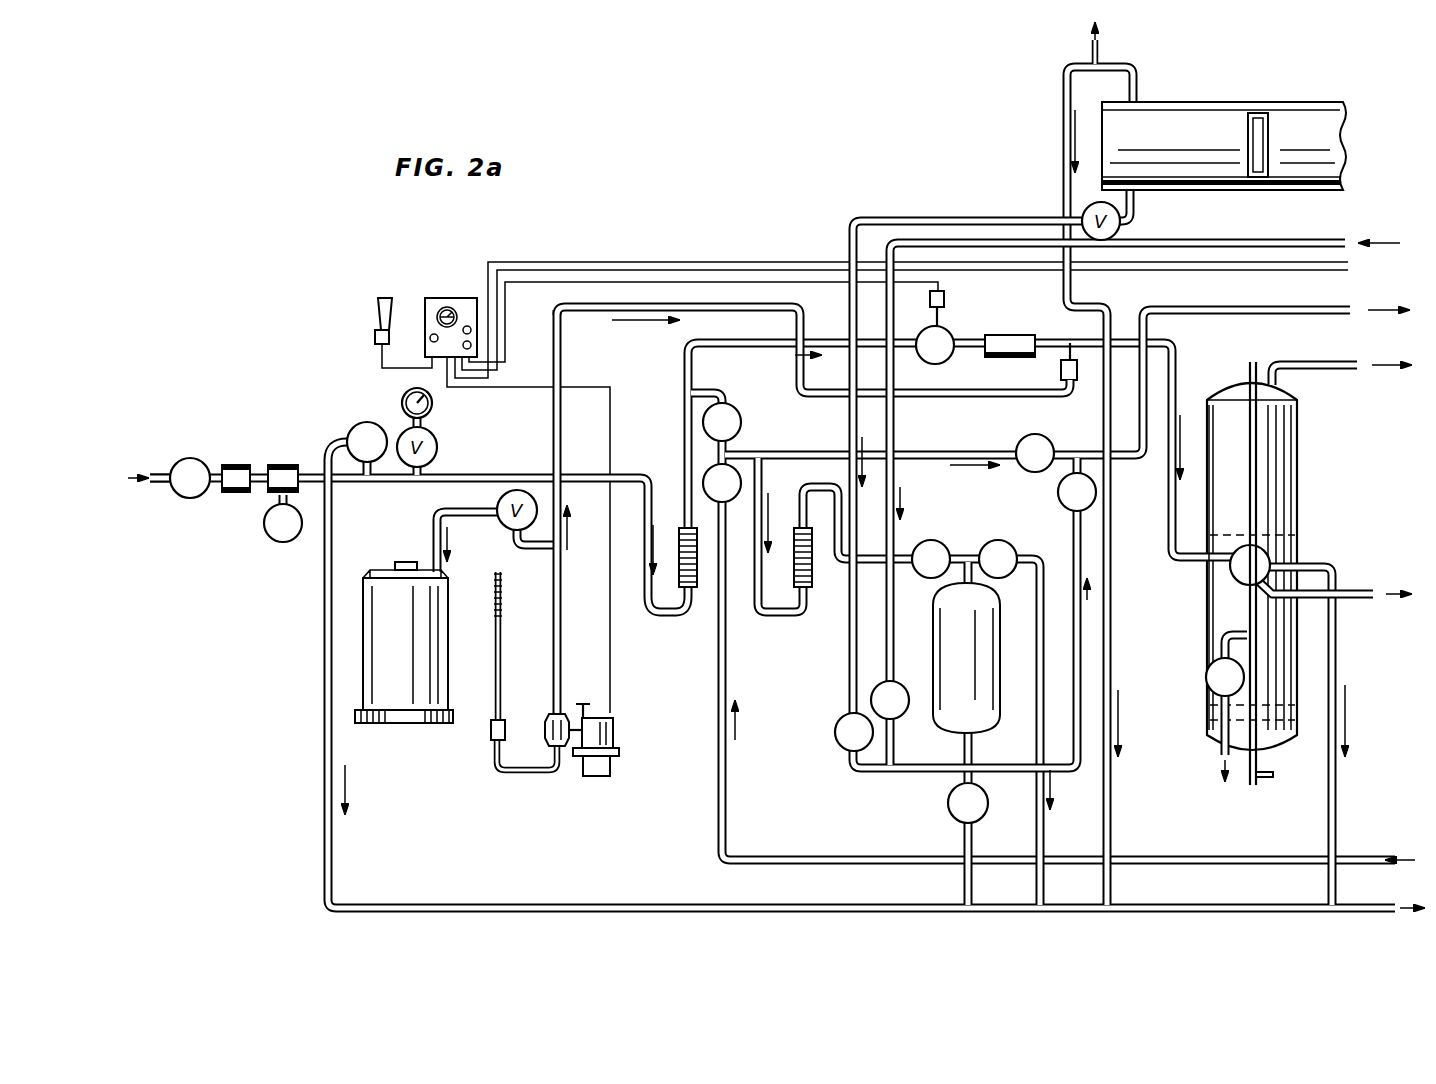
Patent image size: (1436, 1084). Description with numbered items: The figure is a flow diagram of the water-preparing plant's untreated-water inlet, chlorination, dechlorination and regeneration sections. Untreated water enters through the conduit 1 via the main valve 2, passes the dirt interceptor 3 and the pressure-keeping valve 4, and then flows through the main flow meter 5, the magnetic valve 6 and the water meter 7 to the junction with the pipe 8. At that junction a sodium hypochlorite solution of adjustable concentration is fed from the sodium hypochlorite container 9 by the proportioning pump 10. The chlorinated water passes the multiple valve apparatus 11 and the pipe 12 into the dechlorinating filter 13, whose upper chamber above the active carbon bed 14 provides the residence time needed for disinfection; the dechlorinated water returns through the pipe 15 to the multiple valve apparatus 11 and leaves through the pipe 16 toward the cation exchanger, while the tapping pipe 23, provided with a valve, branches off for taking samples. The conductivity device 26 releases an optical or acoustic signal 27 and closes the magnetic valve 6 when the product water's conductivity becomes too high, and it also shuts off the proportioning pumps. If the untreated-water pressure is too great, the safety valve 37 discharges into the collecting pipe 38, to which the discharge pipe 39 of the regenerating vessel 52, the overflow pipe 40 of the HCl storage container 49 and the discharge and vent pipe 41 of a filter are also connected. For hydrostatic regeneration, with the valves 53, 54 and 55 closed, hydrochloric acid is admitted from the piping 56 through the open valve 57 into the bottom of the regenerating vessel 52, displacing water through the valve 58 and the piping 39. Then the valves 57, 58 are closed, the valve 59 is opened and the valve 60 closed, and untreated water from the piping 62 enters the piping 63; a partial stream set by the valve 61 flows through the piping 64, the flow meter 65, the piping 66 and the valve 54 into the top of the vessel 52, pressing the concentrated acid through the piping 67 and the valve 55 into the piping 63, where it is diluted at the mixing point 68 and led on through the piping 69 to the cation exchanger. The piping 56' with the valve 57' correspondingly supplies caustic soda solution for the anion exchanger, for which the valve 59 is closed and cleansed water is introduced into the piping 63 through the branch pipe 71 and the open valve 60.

The piping or conduit 1 is at (160, 487).
The main valve 2 is at (190, 458).
The dirt interceptor 3 is at (225, 494).
The pressure-keeping valve 4 is at (258, 510).
The main flow meter 5 is at (696, 588).
The magnetic valve 6 is at (945, 330).
The water meter 7 is at (1010, 358).
The pipe 8 is at (922, 397).
The sodium hypochlorite container 9 is at (412, 722).
The proportioning or dosing pump 10 is at (549, 716).
The multiple valve apparatus 11 is at (1268, 556).
The pipe 12 is at (1250, 493).
The dechlorinating filter 13 is at (1289, 421).
The charcoal or active carbon bed 14 is at (1210, 622).
The pipe 15 is at (1262, 750).
The pipe 16 is at (1366, 600).
The tapping or draining pipe 23 is at (1223, 722).
The conductivity device 26 is at (466, 298).
The optical and/or acoustic signal 27 is at (375, 310).
The safety valve 37 is at (352, 435).
The collecting pipe 38 is at (545, 904).
The discharge pipe 39 is at (1036, 843).
The overflow pipe 40 is at (1111, 813).
The discharge and air vent pipe 41 is at (1337, 832).
The HCl storage container 49 is at (1330, 120).
The regenerating vessel 52 is at (1010, 598).
The valve 53 is at (950, 805).
The valve 54 is at (933, 540).
The valve 55 is at (1058, 496).
The piping 56 is at (991, 473).
The piping 56' is at (1117, 484).
The valve 57 is at (829, 734).
The valve 57' is at (910, 723).
The valve 58 is at (998, 540).
The valve 59 is at (704, 422).
The valve 60 is at (736, 503).
The valve 61 is at (1016, 453).
The piping 62 is at (712, 393).
The piping 63 is at (760, 455).
The piping 64 is at (790, 614).
The flow meter 65 is at (812, 575).
The piping 66 is at (870, 562).
The piping 67 is at (975, 763).
The mixing point 68 is at (1077, 452).
The piping 69 is at (1266, 315).
The branch pipe 71 is at (1236, 866).